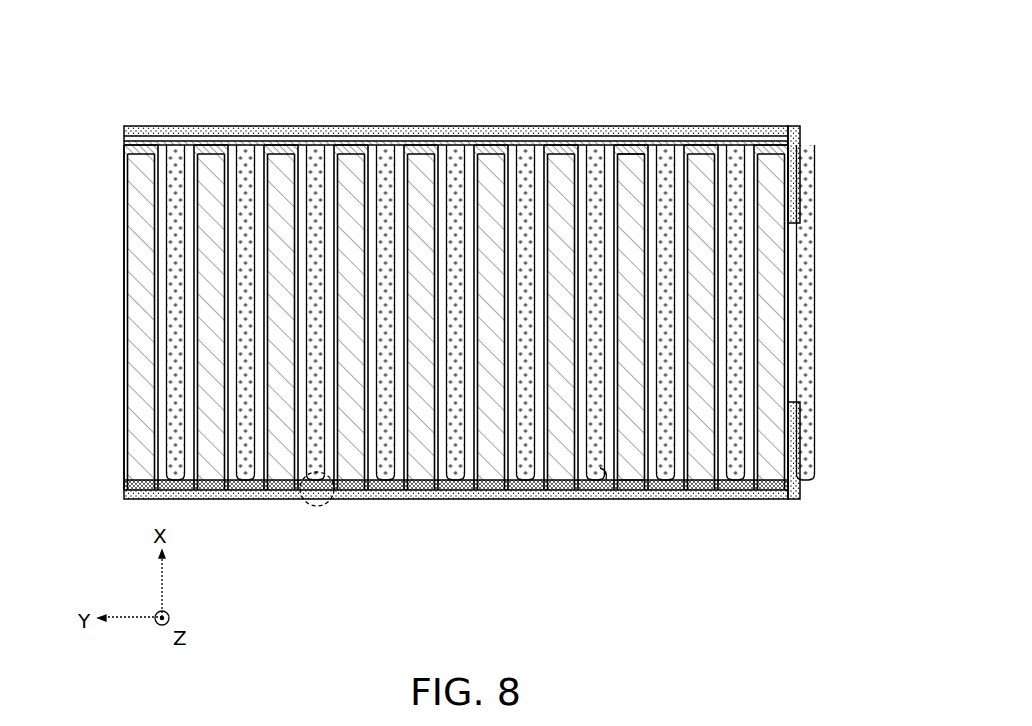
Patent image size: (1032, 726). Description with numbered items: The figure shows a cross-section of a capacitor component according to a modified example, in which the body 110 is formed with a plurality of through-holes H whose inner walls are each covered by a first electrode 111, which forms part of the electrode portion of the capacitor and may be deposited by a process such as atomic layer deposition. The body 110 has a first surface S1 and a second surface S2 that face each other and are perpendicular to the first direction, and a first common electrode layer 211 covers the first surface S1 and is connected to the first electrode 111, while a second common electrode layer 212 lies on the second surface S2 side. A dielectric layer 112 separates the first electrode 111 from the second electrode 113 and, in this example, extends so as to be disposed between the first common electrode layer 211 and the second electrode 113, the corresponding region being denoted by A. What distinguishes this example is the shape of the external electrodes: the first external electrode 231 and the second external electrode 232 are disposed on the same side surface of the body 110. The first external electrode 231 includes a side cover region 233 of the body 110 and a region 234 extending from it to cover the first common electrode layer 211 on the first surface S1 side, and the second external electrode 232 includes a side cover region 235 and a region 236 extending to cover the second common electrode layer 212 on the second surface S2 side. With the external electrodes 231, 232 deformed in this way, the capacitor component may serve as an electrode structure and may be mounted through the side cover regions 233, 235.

The body 110 is at (497, 312).
The first electrode 111 is at (758, 410).
The dielectric layer 112 is at (750, 280).
The second electrode 113 is at (740, 318).
The first common electrode layer 211 is at (697, 482).
The second common electrode layer 212 is at (598, 143).
The first external electrode 231 is at (480, 505).
The second external electrode 232 is at (481, 121).
The side cover region 233 is at (800, 497).
The region 234 is at (758, 493).
The side cover region 235 is at (805, 127).
The region 236 is at (758, 127).
The region A is at (315, 507).
The through-hole H is at (605, 472).
The first surface S1 is at (622, 470).
The second surface S2 is at (628, 147).